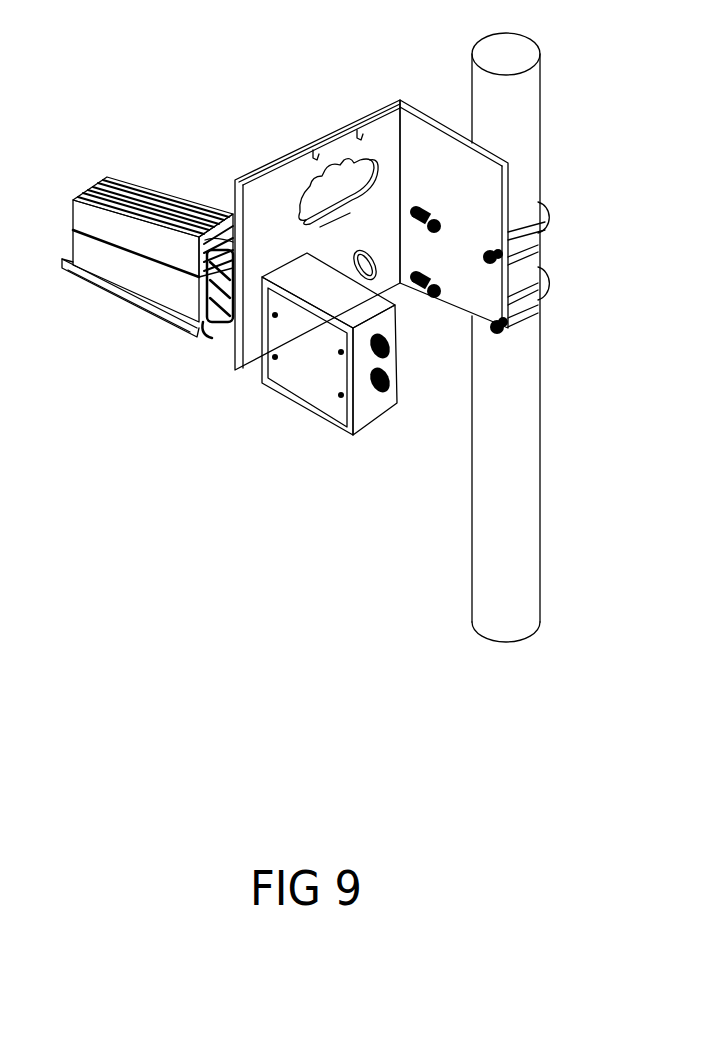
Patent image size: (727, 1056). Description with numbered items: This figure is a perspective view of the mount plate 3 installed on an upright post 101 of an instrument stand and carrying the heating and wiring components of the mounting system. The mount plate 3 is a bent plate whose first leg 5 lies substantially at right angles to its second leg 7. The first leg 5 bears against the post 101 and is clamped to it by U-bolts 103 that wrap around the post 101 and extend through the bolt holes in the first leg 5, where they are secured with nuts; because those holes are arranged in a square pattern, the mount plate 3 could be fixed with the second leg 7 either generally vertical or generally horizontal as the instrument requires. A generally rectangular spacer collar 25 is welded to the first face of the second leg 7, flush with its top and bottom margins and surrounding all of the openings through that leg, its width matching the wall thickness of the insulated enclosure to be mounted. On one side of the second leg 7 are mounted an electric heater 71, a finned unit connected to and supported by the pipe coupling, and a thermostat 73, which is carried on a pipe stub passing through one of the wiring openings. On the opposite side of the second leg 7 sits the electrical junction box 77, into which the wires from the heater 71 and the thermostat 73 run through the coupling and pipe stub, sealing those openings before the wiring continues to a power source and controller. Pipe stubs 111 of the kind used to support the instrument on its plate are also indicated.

The mount plate 3 is at (355, 185).
The first leg 5 is at (454, 167).
The spacer collar 25 is at (301, 212).
The second leg 7 is at (217, 307).
The electric heater 71 is at (135, 276).
The thermostat 73 is at (185, 181).
The electrical junction box 77 is at (329, 373).
The post 101 is at (552, 337).
The U-bolts 103 is at (582, 275).
The pipe stubs 111 is at (156, 337).